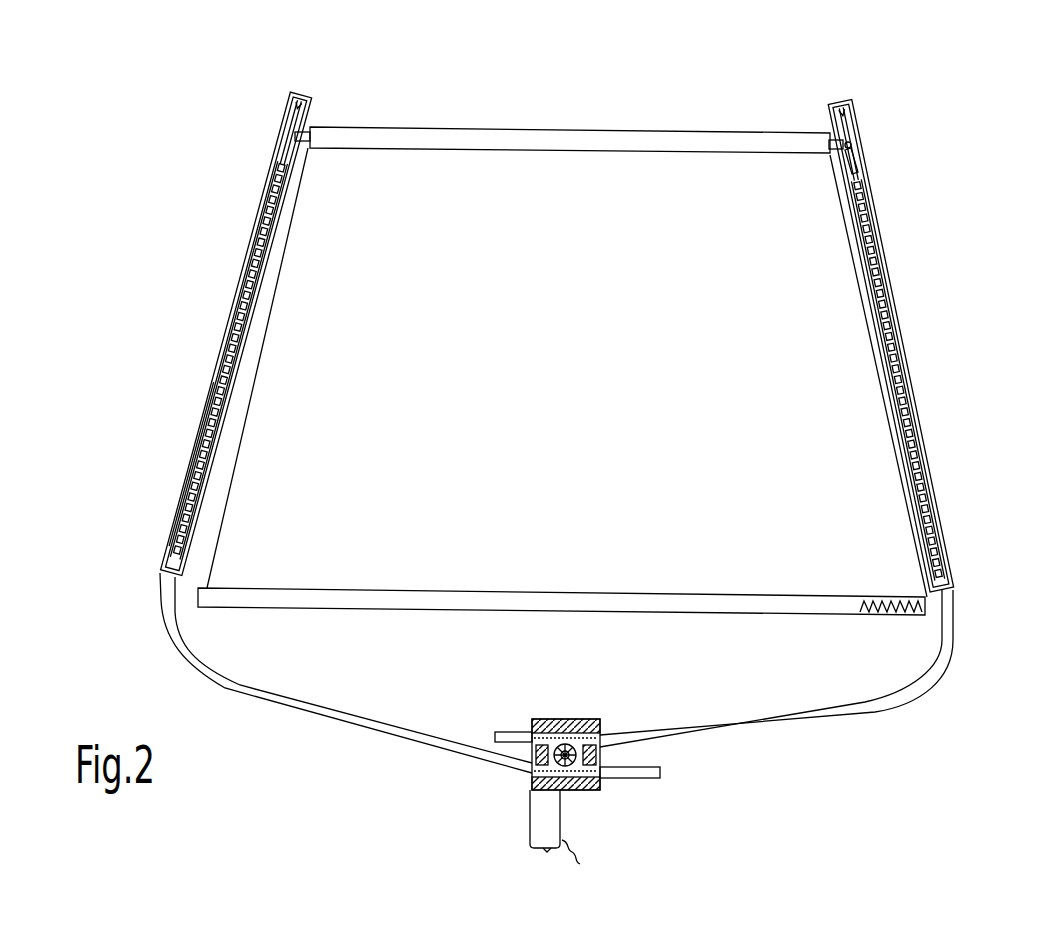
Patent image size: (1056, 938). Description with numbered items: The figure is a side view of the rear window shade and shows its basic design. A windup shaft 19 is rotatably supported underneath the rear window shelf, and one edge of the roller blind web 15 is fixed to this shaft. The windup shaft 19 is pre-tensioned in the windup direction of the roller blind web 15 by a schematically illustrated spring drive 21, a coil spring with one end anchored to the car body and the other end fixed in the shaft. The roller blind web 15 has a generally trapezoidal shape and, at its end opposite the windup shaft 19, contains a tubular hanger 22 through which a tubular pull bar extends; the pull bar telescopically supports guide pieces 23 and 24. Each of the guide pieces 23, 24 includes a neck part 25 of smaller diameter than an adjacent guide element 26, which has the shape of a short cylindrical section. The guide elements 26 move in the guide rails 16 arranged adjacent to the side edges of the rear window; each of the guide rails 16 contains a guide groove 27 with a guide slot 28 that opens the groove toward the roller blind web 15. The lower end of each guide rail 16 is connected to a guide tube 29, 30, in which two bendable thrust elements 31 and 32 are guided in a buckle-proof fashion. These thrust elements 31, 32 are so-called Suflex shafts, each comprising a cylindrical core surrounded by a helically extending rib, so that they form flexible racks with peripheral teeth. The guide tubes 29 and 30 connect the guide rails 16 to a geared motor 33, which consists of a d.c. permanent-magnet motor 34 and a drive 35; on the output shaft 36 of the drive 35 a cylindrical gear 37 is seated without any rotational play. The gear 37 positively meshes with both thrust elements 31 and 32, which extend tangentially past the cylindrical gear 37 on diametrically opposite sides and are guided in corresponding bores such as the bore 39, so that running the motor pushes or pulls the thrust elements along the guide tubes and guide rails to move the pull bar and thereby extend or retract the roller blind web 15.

The roller blind web 15 is at (582, 390).
The guide rails 16 is at (256, 312).
The windup shaft 19 is at (922, 618).
The spring drive 21 is at (880, 600).
The tubular hanger 22 is at (500, 127).
The guide piece 23 is at (312, 123).
The guide piece 24 is at (831, 131).
The neck part 25 is at (851, 141).
The guide element 26 is at (858, 162).
The guide groove 27 is at (301, 100).
The guide slot 28 is at (213, 456).
The guide tube 29 is at (308, 705).
The guide tube 30 is at (818, 722).
The bendable thrust element 31 is at (258, 315).
The bendable thrust element 32 is at (904, 396).
The geared motor 33 is at (598, 753).
The d.c. permanent-magnet motor 34 is at (547, 810).
The drive 35 is at (524, 784).
The output shaft 36 is at (540, 719).
The cylindrical gear 37 is at (602, 757).
The bore 39 is at (600, 713).